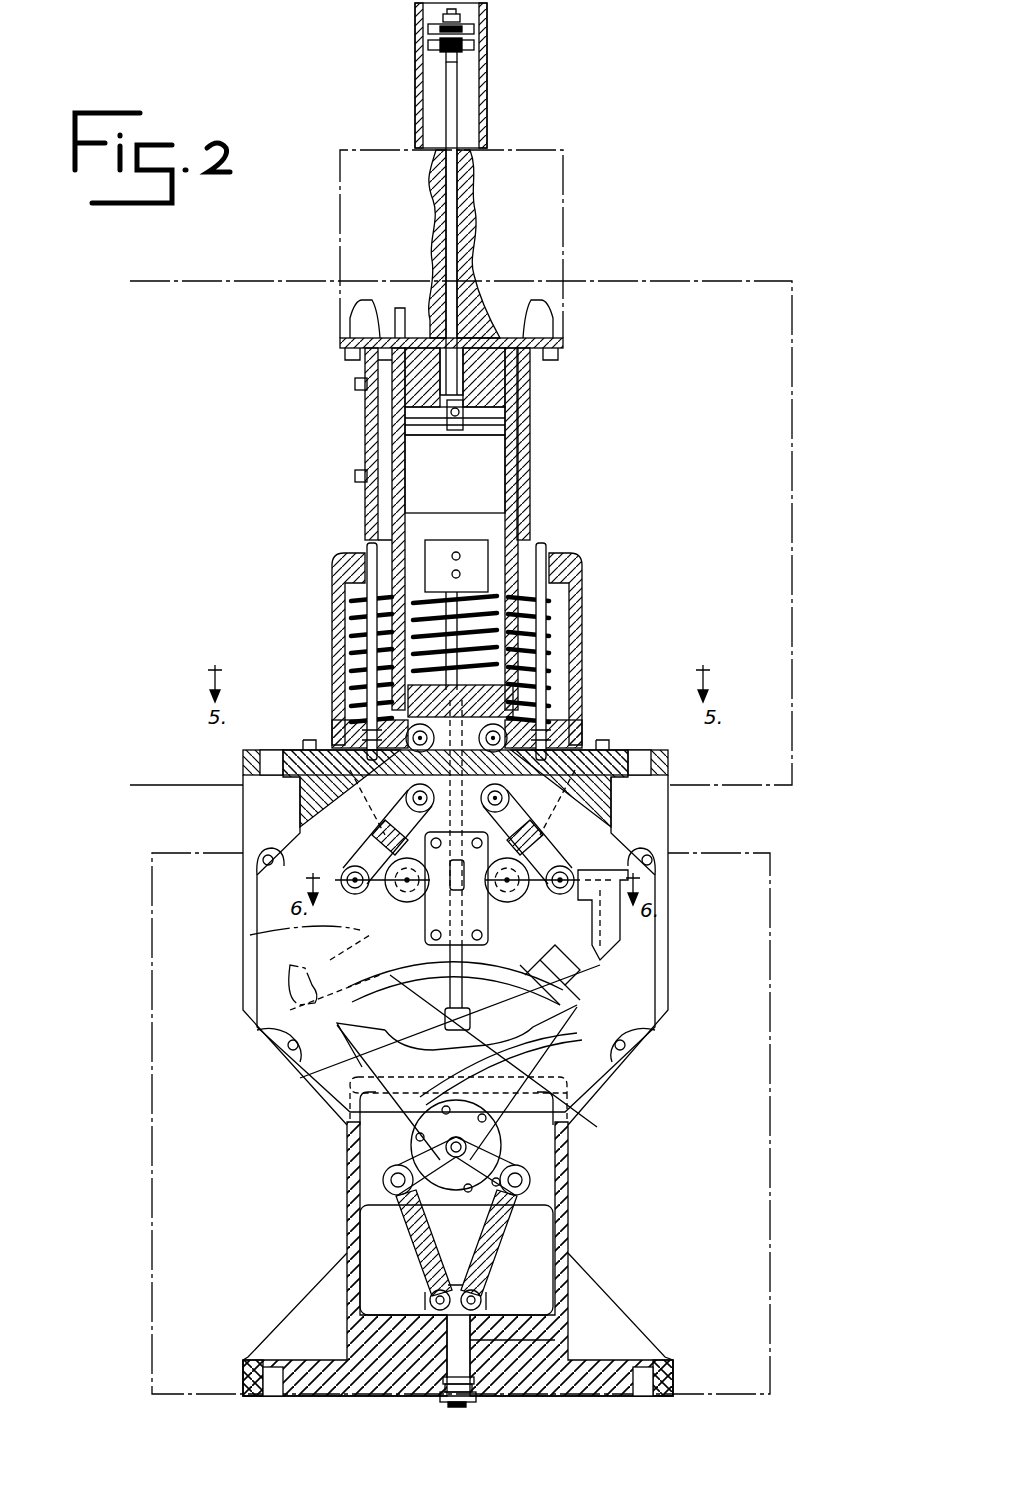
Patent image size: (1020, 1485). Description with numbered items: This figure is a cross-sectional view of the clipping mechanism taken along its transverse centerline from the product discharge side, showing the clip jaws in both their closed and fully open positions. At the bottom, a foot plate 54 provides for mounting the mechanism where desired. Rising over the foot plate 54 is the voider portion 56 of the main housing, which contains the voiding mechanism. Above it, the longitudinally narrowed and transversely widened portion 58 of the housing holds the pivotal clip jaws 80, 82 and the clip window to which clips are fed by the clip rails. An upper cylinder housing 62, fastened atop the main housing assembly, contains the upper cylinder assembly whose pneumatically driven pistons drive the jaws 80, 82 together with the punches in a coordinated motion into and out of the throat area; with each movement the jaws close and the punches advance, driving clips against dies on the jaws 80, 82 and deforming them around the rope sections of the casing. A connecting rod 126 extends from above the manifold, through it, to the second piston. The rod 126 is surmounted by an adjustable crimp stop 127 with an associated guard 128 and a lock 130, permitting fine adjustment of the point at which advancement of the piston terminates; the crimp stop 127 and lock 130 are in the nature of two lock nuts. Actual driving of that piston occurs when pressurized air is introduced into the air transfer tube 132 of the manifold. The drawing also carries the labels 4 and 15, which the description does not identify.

The valve actuator housing 4 is at (152, 1055).
The upper housing enclosure 15 is at (792, 497).
The foot plate 54 is at (610, 1362).
The voider portion 56 is at (572, 1205).
The longitudinally narrowed and transversely widened portion 58 is at (672, 985).
The upper cylinder housing 62 is at (583, 605).
The clip jaw 80 is at (238, 940).
The clip jaw 82 is at (617, 935).
The connecting rod 126 is at (452, 99).
The adjustable crimp stop 127 is at (477, 47).
The guard 128 is at (488, 32).
The lock 130 is at (428, 26).
The air transfer tube 132 is at (463, 247).